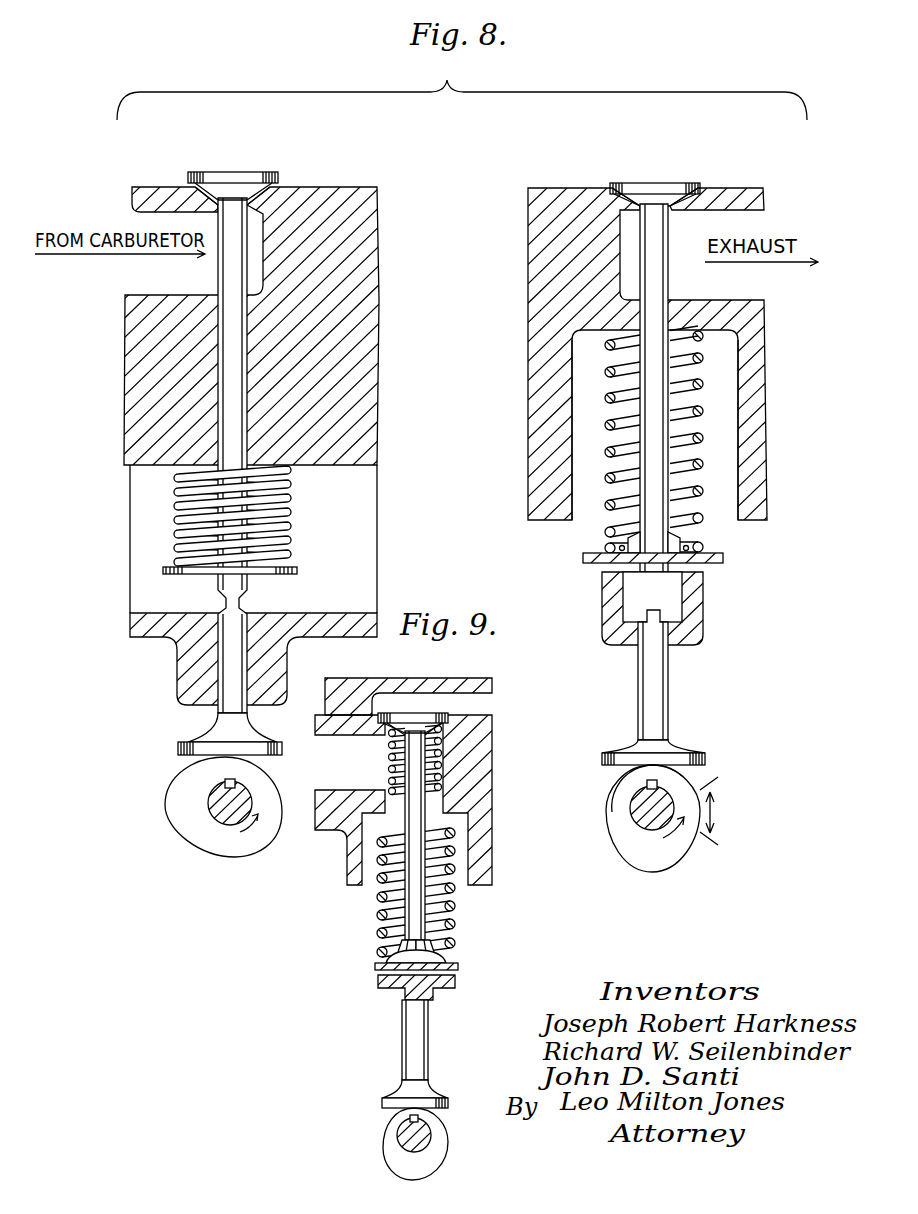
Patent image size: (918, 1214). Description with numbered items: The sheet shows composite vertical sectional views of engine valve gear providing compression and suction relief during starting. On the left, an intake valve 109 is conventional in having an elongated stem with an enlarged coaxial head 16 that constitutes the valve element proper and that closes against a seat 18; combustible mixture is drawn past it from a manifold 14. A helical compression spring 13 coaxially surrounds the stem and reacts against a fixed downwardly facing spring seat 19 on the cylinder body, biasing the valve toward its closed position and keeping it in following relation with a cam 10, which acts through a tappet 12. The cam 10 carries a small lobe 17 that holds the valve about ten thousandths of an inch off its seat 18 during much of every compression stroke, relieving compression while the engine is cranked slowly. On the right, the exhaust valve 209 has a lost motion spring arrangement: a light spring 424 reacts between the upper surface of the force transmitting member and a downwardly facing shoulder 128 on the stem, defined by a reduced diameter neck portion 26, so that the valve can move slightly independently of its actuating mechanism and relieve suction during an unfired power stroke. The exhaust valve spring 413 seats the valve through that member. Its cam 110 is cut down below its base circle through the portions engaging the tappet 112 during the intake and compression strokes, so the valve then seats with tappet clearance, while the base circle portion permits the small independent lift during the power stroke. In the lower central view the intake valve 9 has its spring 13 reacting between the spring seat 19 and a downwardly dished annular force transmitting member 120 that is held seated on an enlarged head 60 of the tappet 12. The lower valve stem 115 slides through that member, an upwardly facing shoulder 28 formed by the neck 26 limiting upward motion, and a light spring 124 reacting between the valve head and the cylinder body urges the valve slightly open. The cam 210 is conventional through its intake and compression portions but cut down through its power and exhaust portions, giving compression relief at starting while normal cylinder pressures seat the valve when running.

In FIG. 8, the cam 10 is at (210, 850).
In FIG. 8, the tappet 12 is at (235, 679).
In FIG. 9, the tappet 12 is at (415, 1043).
In FIG. 8, the spring 13 is at (257, 455).
In FIG. 9, the spring 13 is at (385, 913).
In FIG. 8, the manifold 14 is at (130, 218).
In FIG. 9, the manifold 14 is at (348, 738).
In FIG. 8, the head 16 is at (245, 178).
In FIG. 9, the head 16 is at (415, 710).
In FIG. 8, the lobe 17 is at (245, 745).
In FIG. 8, the seat 18 is at (275, 186).
In FIG. 9, the seat 18 is at (440, 712).
In FIG. 8, the spring seat 19 is at (300, 477).
In FIG. 8, the intake valve 109 is at (453, 159).
In FIG. 9, the intake valve 109 is at (431, 793).
In FIG. 8, the exhaust valve 209 is at (665, 161).
In FIG. 8, the exhaust valve spring 413 is at (618, 403).
In FIG. 8, the shoulder 128 is at (606, 530).
In FIG. 8, the light spring 424 is at (668, 540).
In FIG. 8, the neck portion 26 is at (668, 560).
In FIG. 9, the neck portion 26 is at (398, 945).
In FIG. 8, the tappet 112 is at (655, 697).
In FIG. 8, the cam 110 is at (612, 850).
In FIG. 9, the light spring 124 is at (443, 752).
In FIG. 9, the valve 9 is at (420, 903).
In FIG. 9, the valve stem 115 is at (420, 920).
In FIG. 9, the shoulder 28 is at (440, 946).
In FIG. 9, the force transmitting member 120 is at (457, 965).
In FIG. 9, the head 60 is at (455, 983).
In FIG. 9, the cam 210 is at (392, 1136).